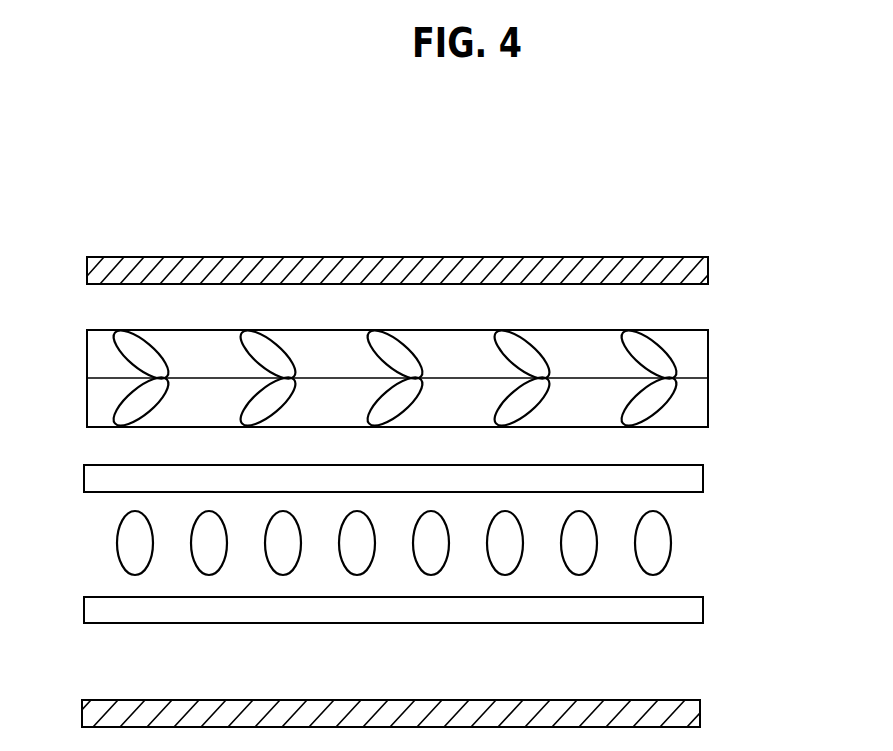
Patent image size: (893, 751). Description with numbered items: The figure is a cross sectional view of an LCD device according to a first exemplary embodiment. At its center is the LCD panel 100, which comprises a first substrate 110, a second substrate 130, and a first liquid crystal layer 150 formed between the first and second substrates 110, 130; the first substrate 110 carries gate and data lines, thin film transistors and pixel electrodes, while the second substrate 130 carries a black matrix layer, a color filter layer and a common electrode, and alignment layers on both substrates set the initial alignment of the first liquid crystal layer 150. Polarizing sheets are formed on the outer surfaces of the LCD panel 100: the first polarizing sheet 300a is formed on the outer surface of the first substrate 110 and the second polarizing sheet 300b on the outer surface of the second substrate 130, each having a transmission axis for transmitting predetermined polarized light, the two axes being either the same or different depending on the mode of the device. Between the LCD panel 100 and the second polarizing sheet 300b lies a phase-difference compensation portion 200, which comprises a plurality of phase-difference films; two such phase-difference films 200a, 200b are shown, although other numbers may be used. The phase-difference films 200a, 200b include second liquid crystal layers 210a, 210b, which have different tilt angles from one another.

The LCD panel 100 is at (474, 546).
The first substrate 110 is at (439, 612).
The second substrate 130 is at (694, 482).
The first liquid crystal layer 150 is at (656, 549).
The phase-difference compensation portion 200 is at (445, 378).
The phase-difference film 200a is at (410, 402).
The phase-difference film 200b is at (410, 355).
The second liquid crystal layer 210a is at (124, 410).
The second liquid crystal layer 210b is at (124, 345).
The first polarizing sheet 300a is at (700, 716).
The second polarizing sheet 300b is at (706, 270).